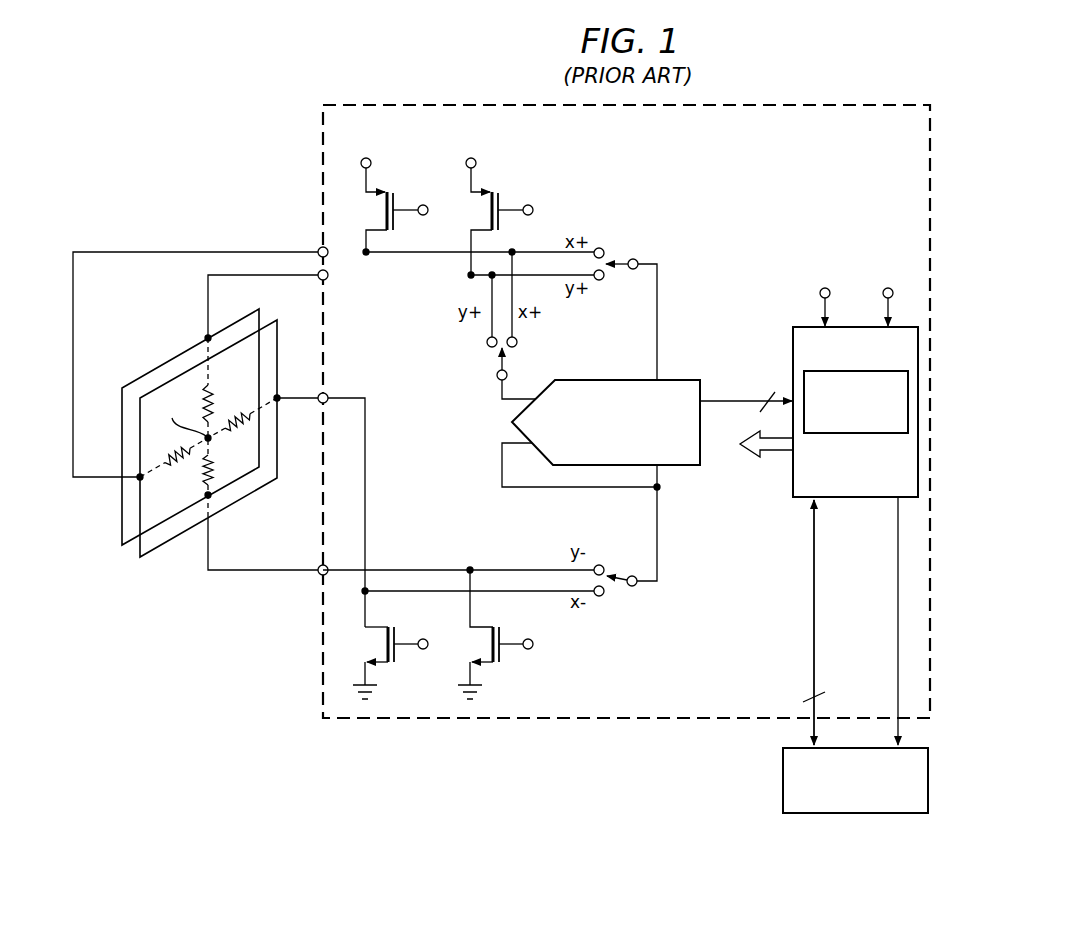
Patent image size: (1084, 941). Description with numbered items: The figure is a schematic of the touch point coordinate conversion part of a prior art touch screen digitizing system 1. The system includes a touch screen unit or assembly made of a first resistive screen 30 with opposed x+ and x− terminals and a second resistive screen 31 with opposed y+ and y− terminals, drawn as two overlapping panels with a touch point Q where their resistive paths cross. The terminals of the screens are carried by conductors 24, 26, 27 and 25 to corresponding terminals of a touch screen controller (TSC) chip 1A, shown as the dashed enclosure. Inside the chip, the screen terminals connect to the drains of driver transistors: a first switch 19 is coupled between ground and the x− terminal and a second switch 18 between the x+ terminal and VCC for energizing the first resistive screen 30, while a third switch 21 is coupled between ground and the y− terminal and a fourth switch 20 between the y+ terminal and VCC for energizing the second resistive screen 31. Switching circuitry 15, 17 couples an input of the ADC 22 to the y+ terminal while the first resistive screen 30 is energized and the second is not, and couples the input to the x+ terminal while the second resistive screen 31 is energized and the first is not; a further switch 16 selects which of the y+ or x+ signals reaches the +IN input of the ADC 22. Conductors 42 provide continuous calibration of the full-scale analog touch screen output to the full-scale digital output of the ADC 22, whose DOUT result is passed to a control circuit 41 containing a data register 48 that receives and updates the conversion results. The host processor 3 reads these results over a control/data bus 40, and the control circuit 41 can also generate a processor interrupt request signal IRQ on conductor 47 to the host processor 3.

The touch screen digitizing system 1 is at (230, 678).
The touch screen controller (TSC) chip 1A is at (323, 207).
The host processor 3 is at (863, 814).
The switching circuitry 15 is at (618, 262).
The switch 16 is at (495, 370).
The switching circuitry 17 is at (620, 588).
The second switch 18 is at (395, 196).
The first switch 19 is at (395, 656).
The fourth switch 20 is at (500, 196).
The third switch 21 is at (500, 656).
The ADC 22 is at (608, 379).
The x+ terminal conductor 24 is at (188, 251).
The y− terminal conductor 25 is at (273, 571).
The y+ terminal conductor 26 is at (208, 292).
The x− terminal conductor 27 is at (366, 490).
The first resistive screen 30 is at (252, 497).
The second resistive screen 31 is at (163, 362).
The control/data bus 40 is at (812, 641).
The control circuit 41 is at (860, 498).
The conductors 42 is at (777, 451).
The conductor 47 is at (896, 641).
The data register 48 is at (863, 434).